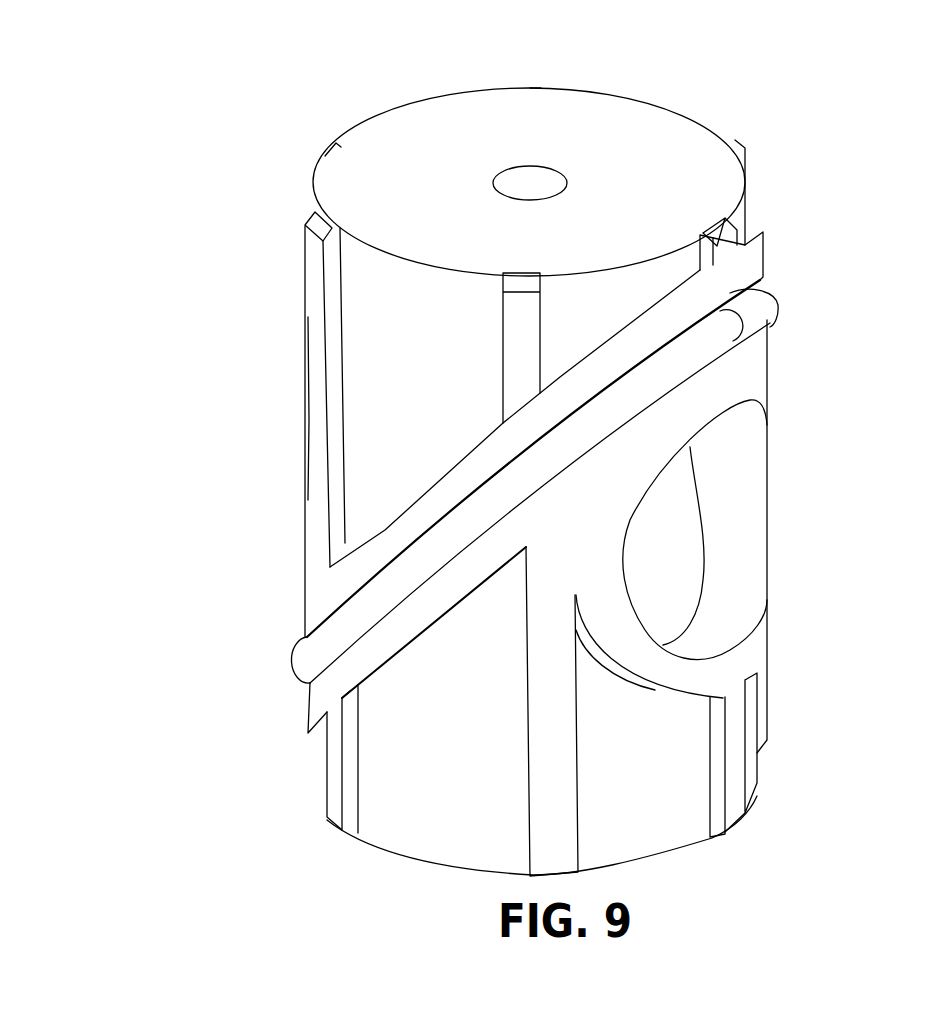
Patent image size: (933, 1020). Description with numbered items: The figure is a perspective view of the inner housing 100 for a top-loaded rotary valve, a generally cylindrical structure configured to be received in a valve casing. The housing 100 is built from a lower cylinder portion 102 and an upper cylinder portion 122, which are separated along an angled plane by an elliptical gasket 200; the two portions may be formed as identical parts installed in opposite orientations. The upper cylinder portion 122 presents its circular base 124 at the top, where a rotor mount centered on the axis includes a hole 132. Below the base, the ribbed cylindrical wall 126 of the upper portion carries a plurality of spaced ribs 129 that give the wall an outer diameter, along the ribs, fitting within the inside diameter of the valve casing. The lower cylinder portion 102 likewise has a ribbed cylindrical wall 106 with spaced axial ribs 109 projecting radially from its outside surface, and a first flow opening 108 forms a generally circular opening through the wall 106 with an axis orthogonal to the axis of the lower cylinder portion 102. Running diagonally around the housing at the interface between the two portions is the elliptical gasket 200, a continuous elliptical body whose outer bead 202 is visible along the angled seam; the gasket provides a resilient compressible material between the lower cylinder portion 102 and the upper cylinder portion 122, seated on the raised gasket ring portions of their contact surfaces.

The inner housing 100 is at (336, 92).
The lower cylinder portion 102 is at (765, 774).
The ribbed cylindrical wall 106 is at (680, 832).
The first flow opening 108 is at (753, 528).
The spaced axial ribs 109 is at (533, 848).
The upper cylinder portion 122 is at (293, 266).
The circular base 124 is at (695, 162).
The ribbed cylindrical wall 126 is at (740, 225).
The spaced ribs 129 is at (503, 312).
The hole 132 is at (526, 172).
The elliptical gasket 200 is at (773, 314).
The outer bead 202 is at (352, 601).